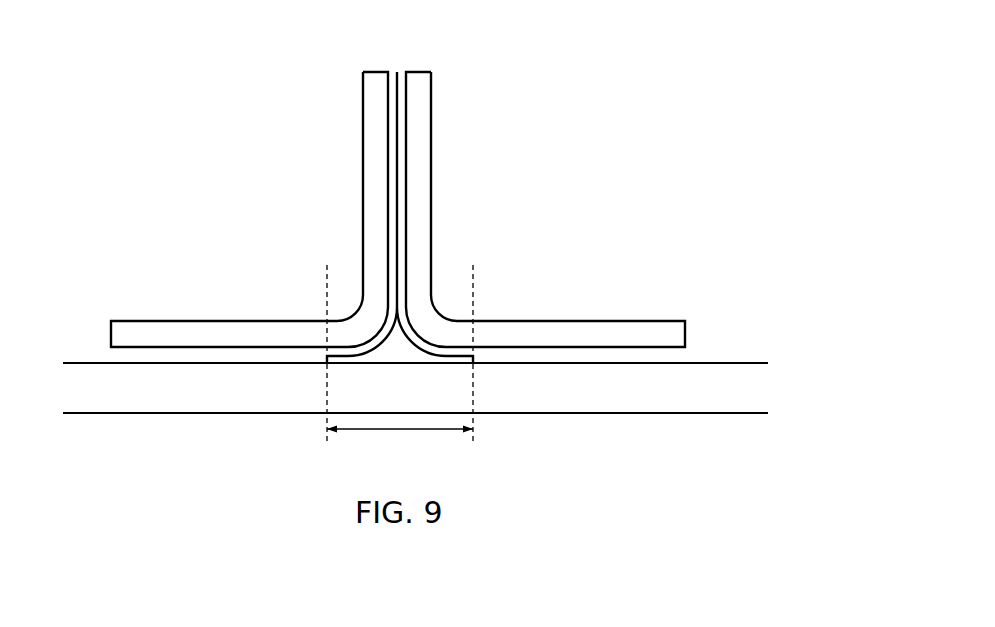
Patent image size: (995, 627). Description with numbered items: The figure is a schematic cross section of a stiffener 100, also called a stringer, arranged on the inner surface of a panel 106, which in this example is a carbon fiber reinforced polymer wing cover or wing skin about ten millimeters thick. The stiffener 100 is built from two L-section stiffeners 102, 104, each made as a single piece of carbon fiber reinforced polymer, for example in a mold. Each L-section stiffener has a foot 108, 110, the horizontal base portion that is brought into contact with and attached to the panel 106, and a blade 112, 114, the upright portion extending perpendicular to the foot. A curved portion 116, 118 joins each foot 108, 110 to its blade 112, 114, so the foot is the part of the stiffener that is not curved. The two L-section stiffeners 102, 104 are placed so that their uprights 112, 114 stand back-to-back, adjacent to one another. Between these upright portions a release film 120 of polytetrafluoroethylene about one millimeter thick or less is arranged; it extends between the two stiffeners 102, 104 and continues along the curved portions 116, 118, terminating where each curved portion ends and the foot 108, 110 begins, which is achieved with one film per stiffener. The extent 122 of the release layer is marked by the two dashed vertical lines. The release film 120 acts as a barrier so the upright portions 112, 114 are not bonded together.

The stiffener 100 is at (330, 59).
The L-section stiffener 102 is at (355, 115).
The L-section stiffener 104 is at (440, 110).
The panel 106 is at (83, 380).
The foot 108 is at (190, 335).
The foot 110 is at (643, 328).
The blade 112 is at (377, 198).
The blade 114 is at (418, 198).
The curved portion 116 is at (357, 321).
The curved portion 118 is at (437, 325).
The release film 120 is at (397, 72).
The extent of the release layer 122 is at (397, 432).